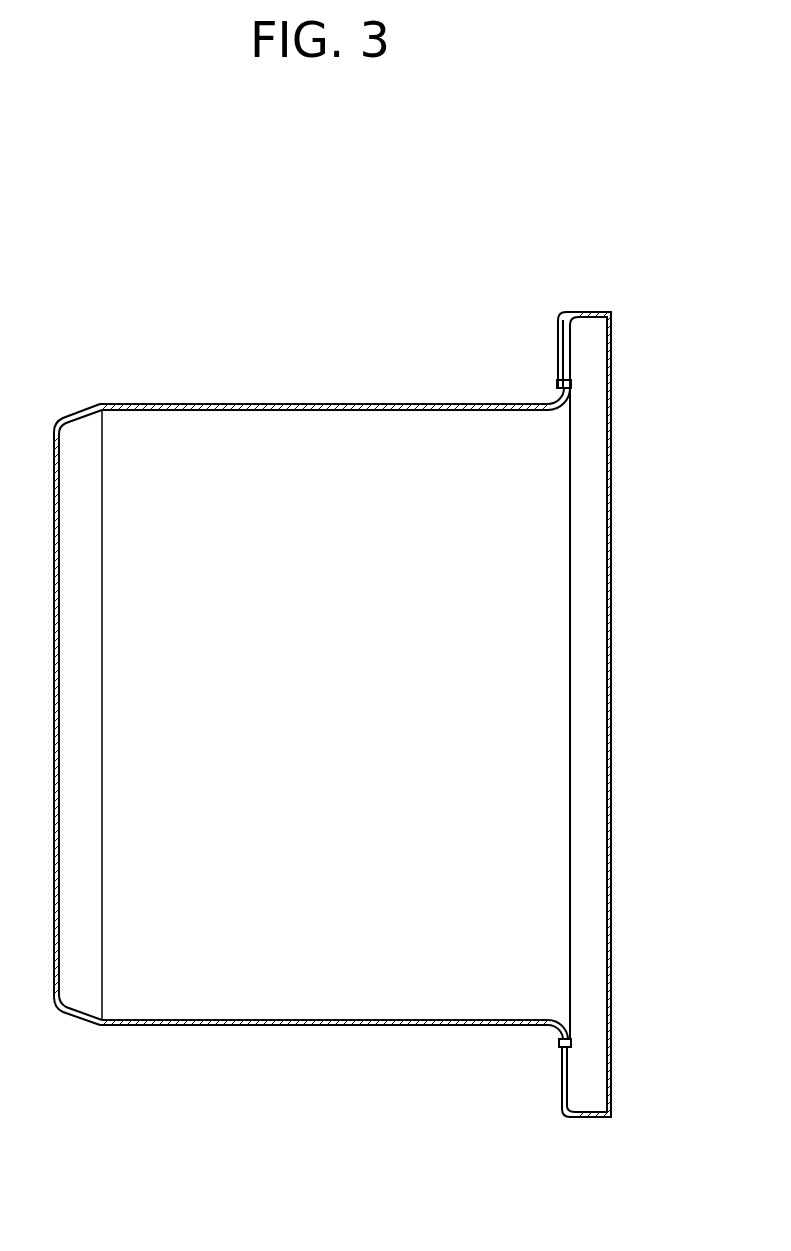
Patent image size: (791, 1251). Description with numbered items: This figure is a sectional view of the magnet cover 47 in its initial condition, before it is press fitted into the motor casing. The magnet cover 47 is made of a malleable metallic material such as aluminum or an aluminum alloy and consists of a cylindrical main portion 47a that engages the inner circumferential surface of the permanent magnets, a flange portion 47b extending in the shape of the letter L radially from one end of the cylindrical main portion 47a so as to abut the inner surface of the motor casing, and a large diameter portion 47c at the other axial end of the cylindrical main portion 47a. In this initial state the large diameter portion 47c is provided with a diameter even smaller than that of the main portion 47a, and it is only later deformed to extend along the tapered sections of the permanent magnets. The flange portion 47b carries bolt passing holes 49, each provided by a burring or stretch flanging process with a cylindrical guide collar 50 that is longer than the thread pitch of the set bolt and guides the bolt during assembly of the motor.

The magnet cover 47 is at (249, 299).
The cylindrical main portion 47a is at (325, 404).
The flange portion 47b is at (577, 312).
The large diameter portion 47c is at (78, 408).
The bolt passing hole 49 is at (558, 381).
The guide collar 50 is at (560, 314).